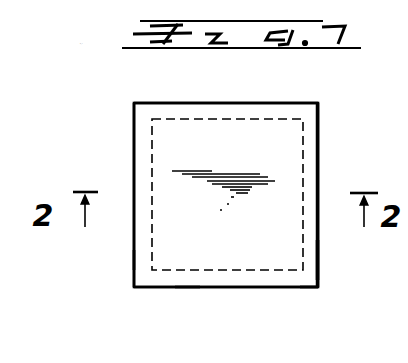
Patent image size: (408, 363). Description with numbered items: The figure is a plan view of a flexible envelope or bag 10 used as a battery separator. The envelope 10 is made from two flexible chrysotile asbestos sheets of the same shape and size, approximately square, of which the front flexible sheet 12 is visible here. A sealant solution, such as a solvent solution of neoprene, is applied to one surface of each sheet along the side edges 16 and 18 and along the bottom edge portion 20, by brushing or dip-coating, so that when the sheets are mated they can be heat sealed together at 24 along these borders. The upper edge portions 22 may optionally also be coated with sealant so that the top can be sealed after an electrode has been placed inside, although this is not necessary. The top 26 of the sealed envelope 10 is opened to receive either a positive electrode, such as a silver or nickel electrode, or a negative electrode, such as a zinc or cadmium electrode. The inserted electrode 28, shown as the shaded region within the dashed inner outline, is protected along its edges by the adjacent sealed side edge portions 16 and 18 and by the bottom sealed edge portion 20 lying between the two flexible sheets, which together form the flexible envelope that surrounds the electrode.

The flexible envelope 10 is at (325, 147).
The flexible sheet 12 is at (287, 179).
The side edge 16 is at (312, 257).
The side edge 18 is at (138, 157).
The bottom edge portion 20 is at (213, 277).
The upper edge portion 22 is at (228, 117).
The heat seal 24 is at (138, 258).
The top 26 is at (279, 103).
The electrode 28 is at (188, 254).